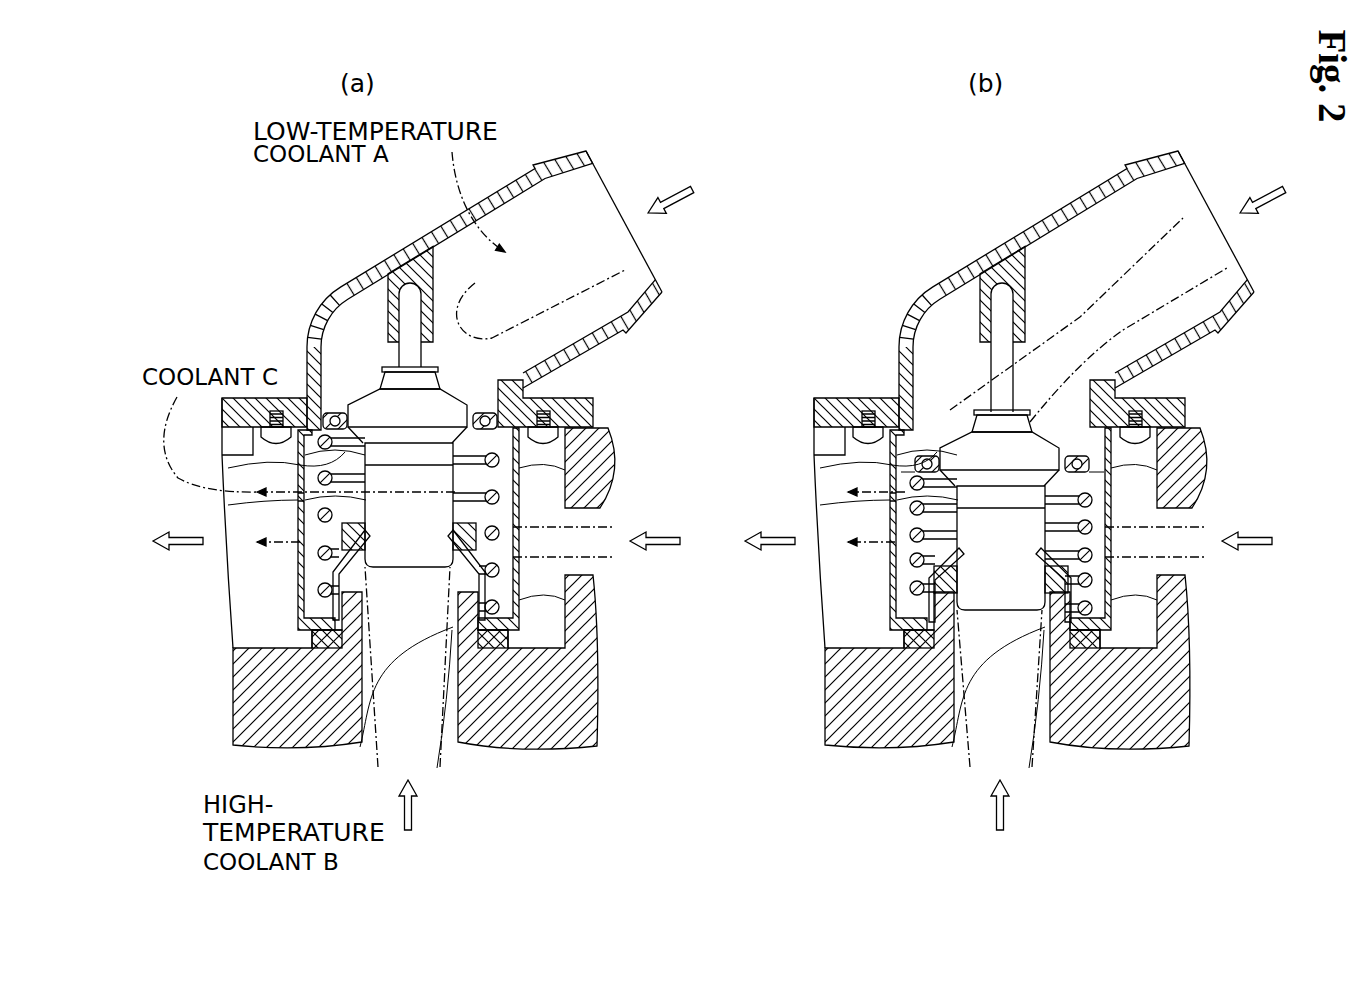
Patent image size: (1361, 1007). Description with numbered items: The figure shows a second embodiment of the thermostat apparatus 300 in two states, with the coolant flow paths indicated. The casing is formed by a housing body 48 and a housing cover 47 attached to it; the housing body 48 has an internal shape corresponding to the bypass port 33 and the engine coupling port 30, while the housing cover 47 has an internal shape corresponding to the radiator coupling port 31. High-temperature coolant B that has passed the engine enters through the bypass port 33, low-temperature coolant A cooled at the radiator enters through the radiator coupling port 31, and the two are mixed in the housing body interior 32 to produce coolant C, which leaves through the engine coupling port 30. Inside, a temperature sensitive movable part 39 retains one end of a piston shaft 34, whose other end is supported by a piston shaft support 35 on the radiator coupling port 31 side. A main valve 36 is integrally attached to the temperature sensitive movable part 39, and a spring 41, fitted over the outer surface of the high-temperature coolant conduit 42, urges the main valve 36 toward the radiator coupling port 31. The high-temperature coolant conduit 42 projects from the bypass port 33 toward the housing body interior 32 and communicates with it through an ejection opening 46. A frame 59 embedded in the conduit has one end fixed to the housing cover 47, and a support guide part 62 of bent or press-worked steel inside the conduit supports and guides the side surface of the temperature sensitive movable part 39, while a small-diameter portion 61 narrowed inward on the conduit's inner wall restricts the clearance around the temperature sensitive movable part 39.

The engine coupling port 30 is at (240, 595).
The radiator coupling port 31 is at (543, 376).
The housing body interior 32 is at (558, 480).
The bypass port 33 is at (448, 727).
The piston shaft 34 is at (409, 288).
The piston shaft support 35 is at (392, 262).
The main valve 36 is at (303, 398).
The temperature sensitive movable part 39 is at (340, 465).
The spring 41 is at (490, 578).
The high-temperature coolant conduit 42 is at (330, 562).
The ejection opening 46 is at (333, 498).
The housing cover 47 is at (543, 157).
The housing body 48 is at (560, 698).
The frame 59 is at (307, 628).
The small-diameter portion 61 is at (365, 683).
The support guide part 62 is at (337, 540).
The thermostat apparatus 300 is at (278, 318).